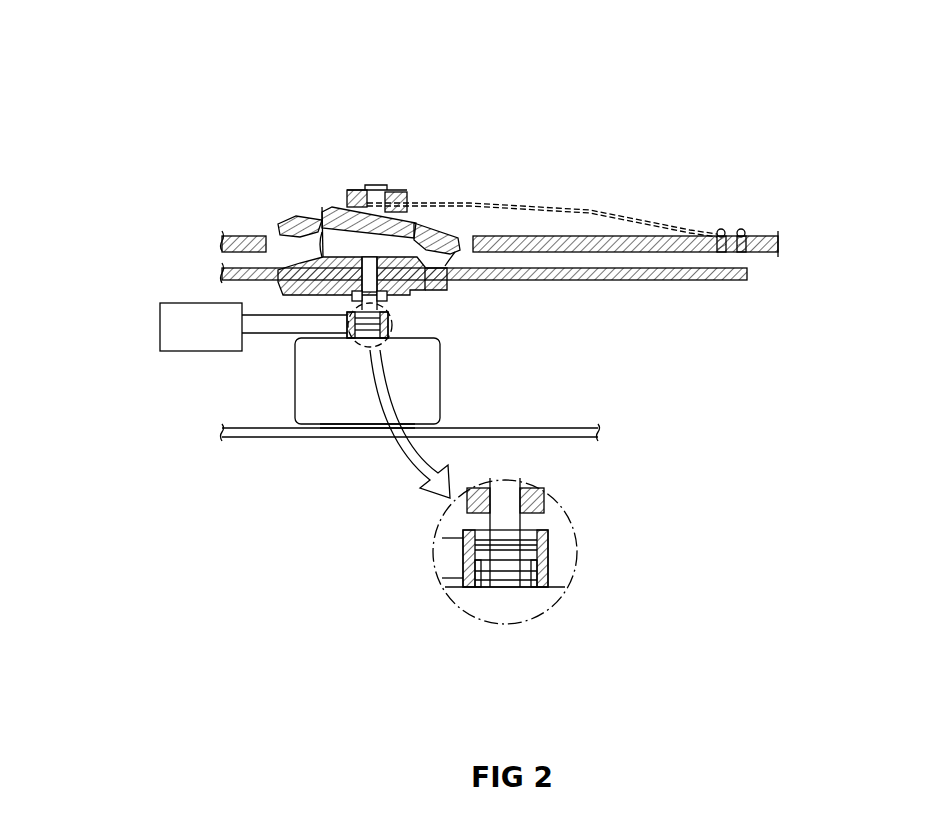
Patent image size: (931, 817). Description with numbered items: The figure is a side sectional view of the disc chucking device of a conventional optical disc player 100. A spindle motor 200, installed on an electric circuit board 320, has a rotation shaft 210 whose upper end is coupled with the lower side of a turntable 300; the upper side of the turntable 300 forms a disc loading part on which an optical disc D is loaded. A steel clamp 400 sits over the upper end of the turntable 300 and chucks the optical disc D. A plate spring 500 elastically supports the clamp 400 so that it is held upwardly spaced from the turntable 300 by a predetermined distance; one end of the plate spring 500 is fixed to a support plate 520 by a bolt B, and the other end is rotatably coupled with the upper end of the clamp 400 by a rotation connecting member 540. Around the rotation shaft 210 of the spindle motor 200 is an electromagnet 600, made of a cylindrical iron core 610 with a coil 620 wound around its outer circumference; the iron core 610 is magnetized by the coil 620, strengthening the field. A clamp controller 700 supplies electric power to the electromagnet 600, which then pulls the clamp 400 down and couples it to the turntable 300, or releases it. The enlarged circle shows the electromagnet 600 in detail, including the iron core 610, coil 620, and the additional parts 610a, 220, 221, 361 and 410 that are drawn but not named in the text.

The optical disc player 100 is at (518, 162).
The spindle motor 200 is at (440, 398).
The rotation shaft 210 is at (342, 292).
The bolt seat plate 220 is at (560, 590).
The seat groove 221 is at (545, 575).
The turntable 300 is at (451, 290).
The electric circuit board 320 is at (568, 425).
The clamp tab 361 is at (313, 222).
The clamp 400 is at (330, 203).
The arm foot 410 is at (411, 200).
The plate spring 500 is at (591, 208).
The support plate 520 is at (700, 252).
The rotation connecting member 540 is at (403, 187).
The electromagnet 600 is at (396, 324).
The iron core 610 is at (548, 536).
The bolt thread 610a is at (458, 563).
The coil 620 is at (548, 557).
The clamp controller 700 is at (198, 360).
The bolt B is at (721, 229).
The optical disc D is at (652, 282).